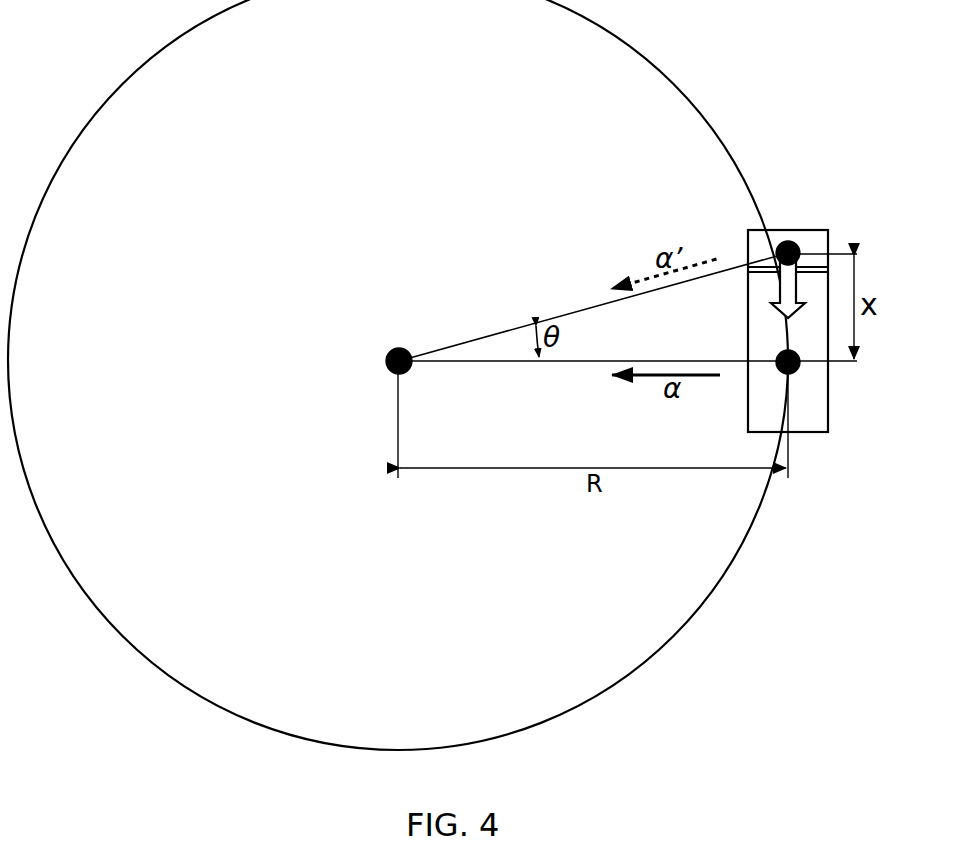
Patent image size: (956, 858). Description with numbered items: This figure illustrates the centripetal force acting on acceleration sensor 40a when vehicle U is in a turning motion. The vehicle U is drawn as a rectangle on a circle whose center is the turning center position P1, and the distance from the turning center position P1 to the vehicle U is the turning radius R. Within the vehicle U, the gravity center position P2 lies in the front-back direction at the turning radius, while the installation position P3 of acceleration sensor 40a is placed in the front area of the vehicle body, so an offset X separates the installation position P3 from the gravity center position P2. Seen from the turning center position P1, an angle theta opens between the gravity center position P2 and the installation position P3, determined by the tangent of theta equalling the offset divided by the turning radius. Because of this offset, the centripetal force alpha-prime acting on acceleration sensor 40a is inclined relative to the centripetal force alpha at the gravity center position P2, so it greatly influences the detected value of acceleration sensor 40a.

The acceleration sensor 40a is at (803, 248).
The turning center position P1 is at (394, 347).
The gravity center position P2 is at (804, 370).
The installation position P3 is at (804, 246).
The vehicle U is at (823, 425).